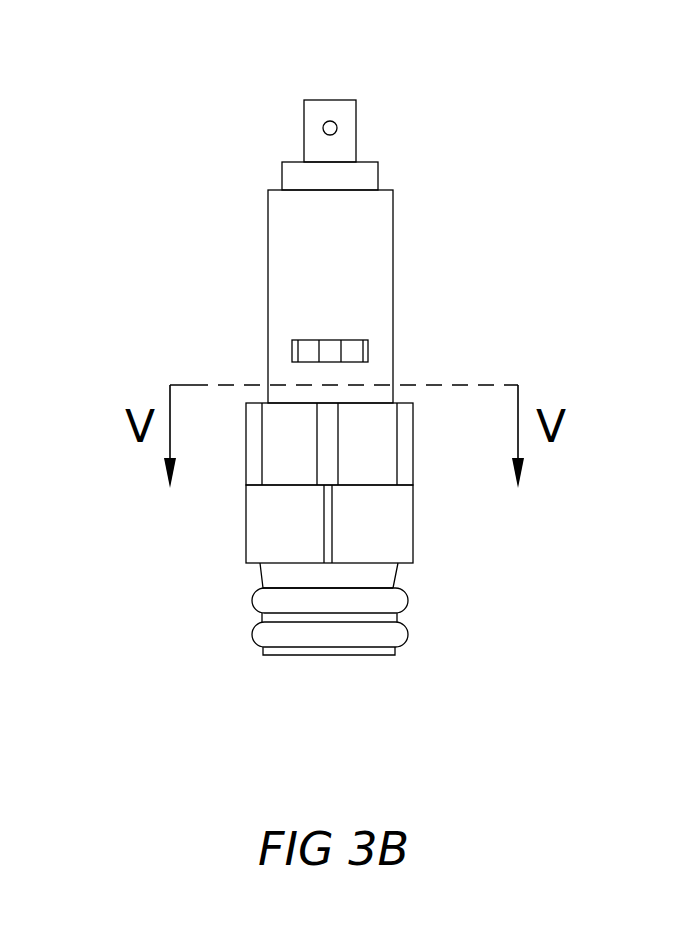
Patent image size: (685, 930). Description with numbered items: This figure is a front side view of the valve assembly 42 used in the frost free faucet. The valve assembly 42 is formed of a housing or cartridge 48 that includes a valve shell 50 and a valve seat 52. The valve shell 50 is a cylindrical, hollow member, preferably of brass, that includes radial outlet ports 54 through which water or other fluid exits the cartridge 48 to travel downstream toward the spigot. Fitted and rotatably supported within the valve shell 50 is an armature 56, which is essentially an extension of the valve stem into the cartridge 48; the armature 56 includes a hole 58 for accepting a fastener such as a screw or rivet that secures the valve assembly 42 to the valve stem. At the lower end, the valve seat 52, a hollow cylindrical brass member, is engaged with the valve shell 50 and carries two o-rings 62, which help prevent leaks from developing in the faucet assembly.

The valve assembly 42 is at (556, 127).
The cartridge 48 is at (402, 243).
The valve shell 50 is at (393, 312).
The valve seat 52 is at (410, 521).
The outlet ports 54 is at (310, 350).
The armature 56 is at (352, 115).
The hole 58 is at (323, 128).
The o-rings 62 is at (408, 637).